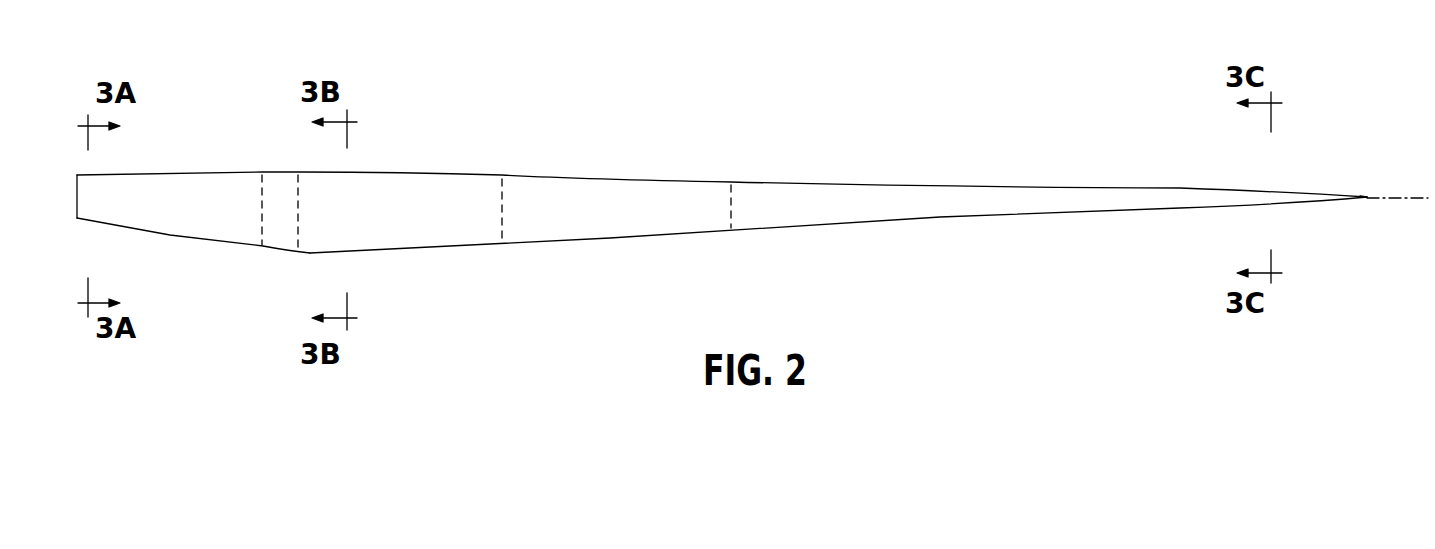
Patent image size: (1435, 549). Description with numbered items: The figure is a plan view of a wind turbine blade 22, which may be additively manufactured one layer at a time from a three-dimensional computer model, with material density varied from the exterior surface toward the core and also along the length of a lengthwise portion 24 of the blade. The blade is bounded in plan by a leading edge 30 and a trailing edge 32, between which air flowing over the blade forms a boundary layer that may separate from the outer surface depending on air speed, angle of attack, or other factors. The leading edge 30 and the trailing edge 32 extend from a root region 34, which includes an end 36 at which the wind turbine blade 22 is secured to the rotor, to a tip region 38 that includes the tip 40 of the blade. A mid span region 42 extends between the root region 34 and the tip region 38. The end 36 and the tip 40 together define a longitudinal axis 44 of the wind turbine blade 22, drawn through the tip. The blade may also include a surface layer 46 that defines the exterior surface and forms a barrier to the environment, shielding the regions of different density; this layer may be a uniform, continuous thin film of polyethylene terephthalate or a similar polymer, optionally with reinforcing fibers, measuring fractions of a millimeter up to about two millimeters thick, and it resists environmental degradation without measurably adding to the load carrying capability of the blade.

The wind turbine blade 22 is at (743, 185).
The lengthwise portion 24 is at (263, 170).
The leading edge 30 is at (627, 180).
The trailing edge 32 is at (310, 253).
The root region 34 is at (198, 256).
The end 36 is at (77, 203).
The tip region 38 is at (1365, 210).
The tip 40 is at (1368, 193).
The mid span region 42 is at (220, 253).
The longitudinal axis 44 is at (1408, 199).
The surface layer 46 is at (787, 228).